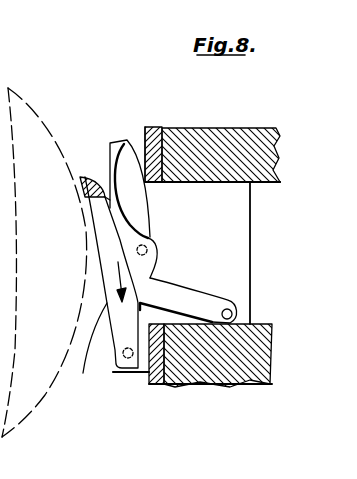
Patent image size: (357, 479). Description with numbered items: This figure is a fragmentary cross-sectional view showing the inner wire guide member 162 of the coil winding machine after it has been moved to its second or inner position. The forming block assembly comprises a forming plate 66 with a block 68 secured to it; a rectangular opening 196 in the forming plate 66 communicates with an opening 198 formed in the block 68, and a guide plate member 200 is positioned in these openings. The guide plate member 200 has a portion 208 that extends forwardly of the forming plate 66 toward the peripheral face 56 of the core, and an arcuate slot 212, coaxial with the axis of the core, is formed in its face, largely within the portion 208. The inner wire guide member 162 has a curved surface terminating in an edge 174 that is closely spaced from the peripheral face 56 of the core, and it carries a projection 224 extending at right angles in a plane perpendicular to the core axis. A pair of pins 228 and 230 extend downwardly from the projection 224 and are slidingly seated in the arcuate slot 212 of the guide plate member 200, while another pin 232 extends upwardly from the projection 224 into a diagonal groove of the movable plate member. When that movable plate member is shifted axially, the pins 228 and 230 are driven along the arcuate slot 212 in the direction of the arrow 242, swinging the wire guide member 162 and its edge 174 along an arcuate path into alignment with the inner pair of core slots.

The peripheral face 56 is at (48, 128).
The forming plate 66 is at (153, 128).
The block 68 is at (227, 128).
The inner wire guide member 162 is at (89, 176).
The edge 174 is at (81, 176).
The rectangular opening 196 is at (152, 184).
The opening 198 is at (268, 184).
The guide plate member 200 is at (251, 260).
The portion 208 is at (140, 376).
The arcuate slot 212 is at (120, 145).
The projection 224 is at (87, 351).
The pin 228 is at (123, 374).
The pin 230 is at (149, 249).
The pin 232 is at (233, 315).
The arrow 242 is at (117, 274).